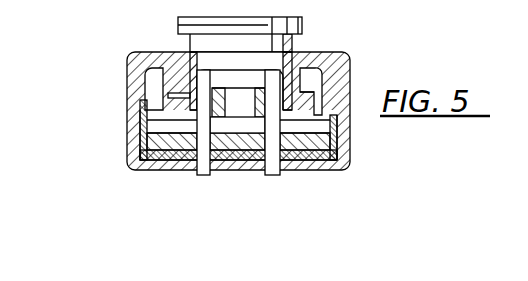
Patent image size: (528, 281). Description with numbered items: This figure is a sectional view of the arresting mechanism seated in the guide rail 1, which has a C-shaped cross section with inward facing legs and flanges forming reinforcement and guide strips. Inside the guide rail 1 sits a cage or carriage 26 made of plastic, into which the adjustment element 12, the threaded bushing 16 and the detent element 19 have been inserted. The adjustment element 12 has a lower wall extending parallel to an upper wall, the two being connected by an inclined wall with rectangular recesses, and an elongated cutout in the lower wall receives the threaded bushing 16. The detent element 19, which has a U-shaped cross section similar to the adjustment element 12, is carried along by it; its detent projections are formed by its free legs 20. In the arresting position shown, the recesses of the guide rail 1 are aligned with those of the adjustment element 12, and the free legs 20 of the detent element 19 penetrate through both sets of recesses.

The guide rail 1 is at (127, 62).
The cage or carriage 26 is at (140, 95).
The adjustment element 12 is at (140, 124).
The detent element 19 is at (140, 152).
The free legs 20 is at (238, 155).
The threaded bushing 16 is at (302, 26).